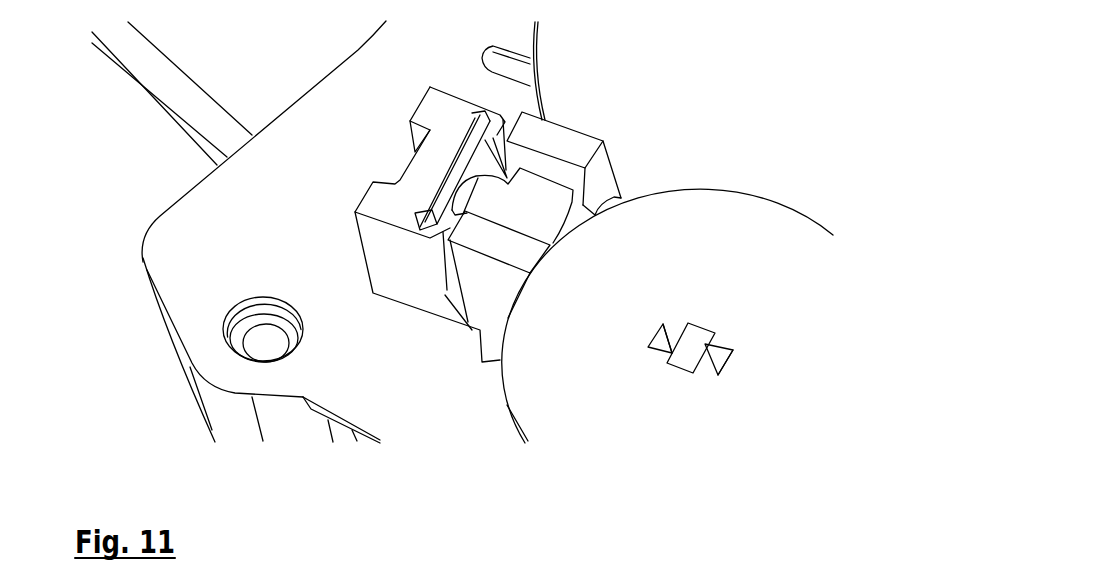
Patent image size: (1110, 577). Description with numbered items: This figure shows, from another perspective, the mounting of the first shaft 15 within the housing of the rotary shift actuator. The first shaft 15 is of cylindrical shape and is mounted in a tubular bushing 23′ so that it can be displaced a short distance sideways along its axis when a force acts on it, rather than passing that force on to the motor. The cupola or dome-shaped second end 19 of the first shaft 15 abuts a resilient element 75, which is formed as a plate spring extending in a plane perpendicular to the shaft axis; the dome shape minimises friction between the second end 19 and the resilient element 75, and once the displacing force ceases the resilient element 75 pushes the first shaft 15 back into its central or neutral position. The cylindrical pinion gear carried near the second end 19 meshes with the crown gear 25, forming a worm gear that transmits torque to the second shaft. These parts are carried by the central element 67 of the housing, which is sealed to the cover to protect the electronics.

The central element 67 is at (283, 228).
The resilient element 75 is at (417, 212).
The second end 19 is at (470, 240).
The tubular bushing 23′ is at (527, 200).
The first shaft 15 is at (581, 208).
The crown gear 25 is at (743, 273).